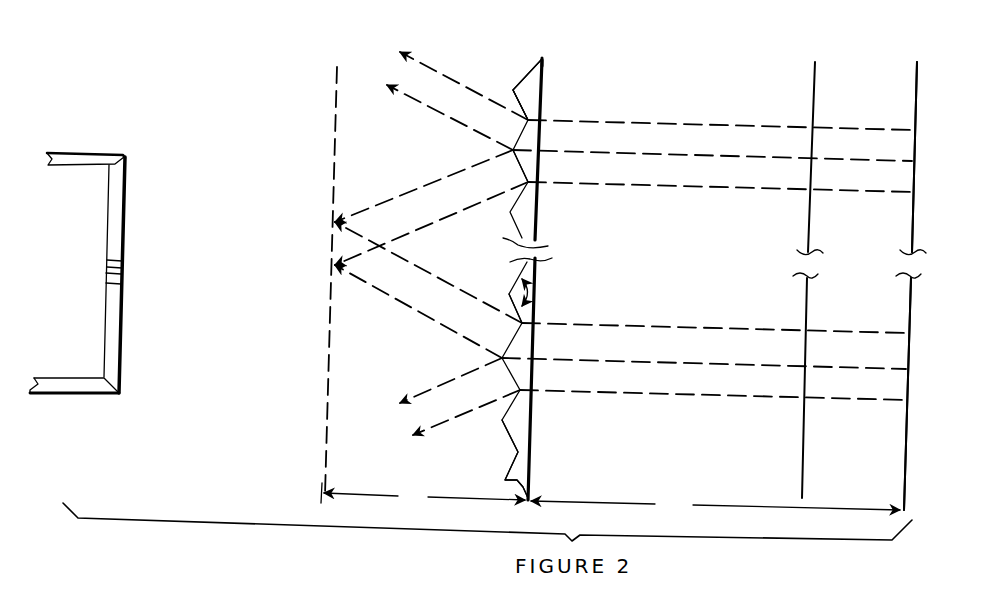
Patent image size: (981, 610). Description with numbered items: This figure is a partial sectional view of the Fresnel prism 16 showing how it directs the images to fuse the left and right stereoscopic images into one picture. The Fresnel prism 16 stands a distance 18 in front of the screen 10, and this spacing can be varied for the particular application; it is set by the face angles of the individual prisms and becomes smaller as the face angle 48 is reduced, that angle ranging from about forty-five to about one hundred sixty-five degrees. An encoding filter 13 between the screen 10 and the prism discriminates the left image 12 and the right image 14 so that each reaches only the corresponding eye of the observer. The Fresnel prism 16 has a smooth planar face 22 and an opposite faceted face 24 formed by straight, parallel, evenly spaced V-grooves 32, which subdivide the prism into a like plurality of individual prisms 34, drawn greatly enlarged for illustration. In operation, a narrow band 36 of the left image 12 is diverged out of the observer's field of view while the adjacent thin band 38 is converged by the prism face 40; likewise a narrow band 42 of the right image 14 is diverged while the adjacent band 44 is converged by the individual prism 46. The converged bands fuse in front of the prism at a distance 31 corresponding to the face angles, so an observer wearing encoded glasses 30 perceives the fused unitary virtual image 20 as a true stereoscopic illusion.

The screen 10 is at (910, 103).
The left image 12 is at (912, 172).
The filter 13 is at (813, 107).
The right image 14 is at (905, 387).
The Fresnel prism 16 is at (546, 62).
The distance 18 is at (715, 510).
The unitary virtual image 20 is at (335, 108).
The planar face 22 is at (543, 106).
The faceted face 24 is at (524, 70).
The encoded glasses 30 is at (127, 367).
The distance 31 is at (423, 497).
The V-grooves 32 is at (518, 452).
The individual prisms 34 is at (525, 92).
The narrow band 36 is at (656, 137).
The thin band 38 is at (700, 170).
The prism face 40 is at (521, 165).
The narrow band 42 is at (715, 380).
The narrow band 44 is at (675, 343).
The individual prism 46 is at (510, 333).
The face angle 48 is at (537, 287).